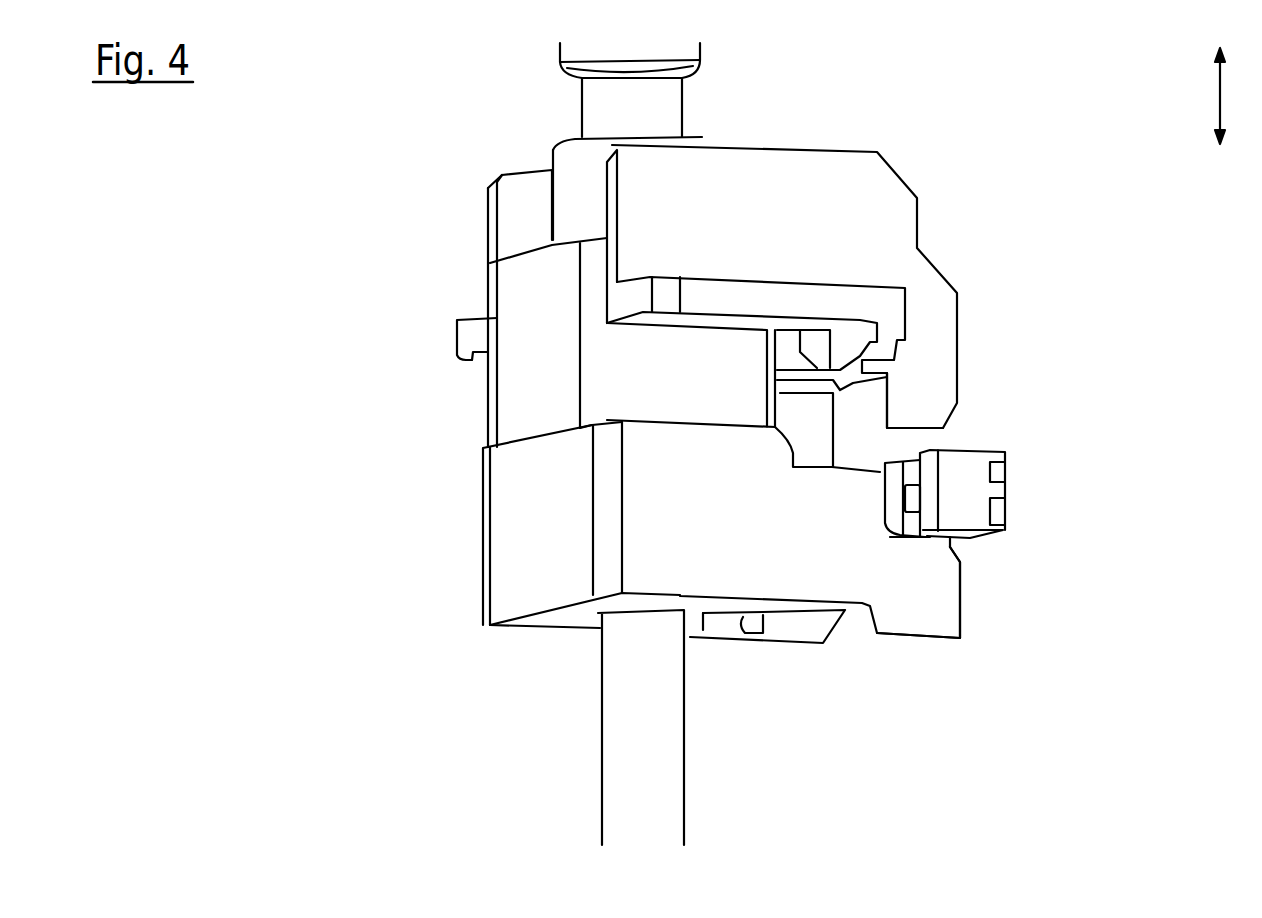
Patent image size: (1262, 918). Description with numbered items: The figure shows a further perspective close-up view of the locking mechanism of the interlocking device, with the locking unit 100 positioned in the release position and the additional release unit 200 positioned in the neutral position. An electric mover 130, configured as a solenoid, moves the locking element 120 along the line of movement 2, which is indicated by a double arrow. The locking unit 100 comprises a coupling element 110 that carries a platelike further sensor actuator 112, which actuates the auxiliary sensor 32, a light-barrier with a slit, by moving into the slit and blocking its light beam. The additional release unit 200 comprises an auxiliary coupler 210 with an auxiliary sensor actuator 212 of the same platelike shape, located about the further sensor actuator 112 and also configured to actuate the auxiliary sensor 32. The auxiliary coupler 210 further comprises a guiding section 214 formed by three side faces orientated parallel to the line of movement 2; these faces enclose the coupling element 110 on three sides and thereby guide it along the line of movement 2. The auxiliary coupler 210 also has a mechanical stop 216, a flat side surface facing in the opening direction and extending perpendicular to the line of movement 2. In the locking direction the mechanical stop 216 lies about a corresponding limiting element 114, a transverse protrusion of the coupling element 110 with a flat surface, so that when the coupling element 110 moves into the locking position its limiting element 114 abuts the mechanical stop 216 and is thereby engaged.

The line of movement 2 is at (1232, 96).
The auxiliary sensor 32 is at (1012, 488).
The locking unit 100 is at (702, 433).
The coupling element 110 is at (698, 534).
The further sensor actuator 112 is at (940, 606).
The limiting element 114 is at (575, 432).
The locking element 120 is at (702, 46).
The electric mover 130 is at (687, 773).
The additional release unit 200 is at (718, 281).
The auxiliary coupler 210 is at (917, 218).
The auxiliary sensor actuator 212 is at (935, 393).
The guiding section 214 is at (513, 188).
The mechanical stop 216 is at (670, 320).